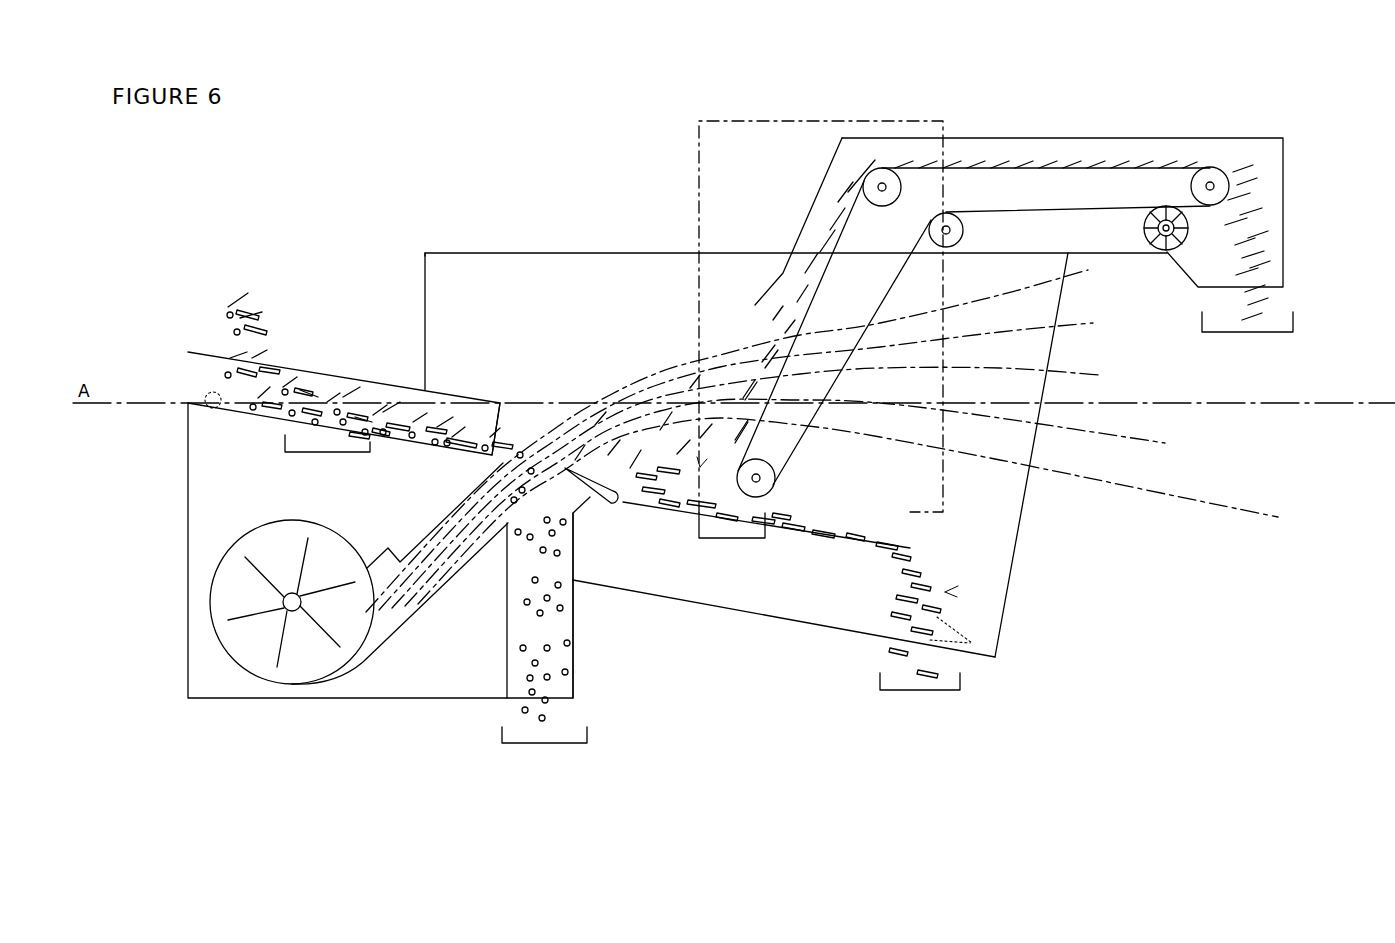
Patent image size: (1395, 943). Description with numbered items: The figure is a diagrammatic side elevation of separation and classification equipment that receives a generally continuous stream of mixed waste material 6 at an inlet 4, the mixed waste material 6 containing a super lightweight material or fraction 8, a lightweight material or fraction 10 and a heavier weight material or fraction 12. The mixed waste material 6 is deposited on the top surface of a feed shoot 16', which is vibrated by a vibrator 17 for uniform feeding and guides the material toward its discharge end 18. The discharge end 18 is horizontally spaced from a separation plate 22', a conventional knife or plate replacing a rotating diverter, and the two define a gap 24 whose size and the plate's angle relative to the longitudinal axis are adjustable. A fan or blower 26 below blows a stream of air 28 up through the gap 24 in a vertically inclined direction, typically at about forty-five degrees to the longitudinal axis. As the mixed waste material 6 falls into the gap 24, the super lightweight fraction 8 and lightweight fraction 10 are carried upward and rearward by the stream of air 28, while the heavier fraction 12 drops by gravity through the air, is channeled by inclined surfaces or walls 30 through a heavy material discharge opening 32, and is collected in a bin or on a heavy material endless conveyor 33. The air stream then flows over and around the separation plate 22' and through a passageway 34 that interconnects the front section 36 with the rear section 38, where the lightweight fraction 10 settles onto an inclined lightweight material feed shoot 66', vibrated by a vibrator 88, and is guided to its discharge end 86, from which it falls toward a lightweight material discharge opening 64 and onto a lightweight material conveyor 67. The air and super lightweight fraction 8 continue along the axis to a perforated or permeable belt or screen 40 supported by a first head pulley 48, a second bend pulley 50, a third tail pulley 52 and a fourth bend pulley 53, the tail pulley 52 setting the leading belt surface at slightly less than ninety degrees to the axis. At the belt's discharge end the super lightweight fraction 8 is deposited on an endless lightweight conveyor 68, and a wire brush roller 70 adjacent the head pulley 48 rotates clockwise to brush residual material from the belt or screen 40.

The inlet 4 is at (186, 399).
The mixed waste material 6 is at (232, 323).
The super lightweight material or fraction 8 is at (1163, 153).
The lightweight material or fraction 10 is at (997, 657).
The heavier weight material or fraction 12 is at (567, 607).
The mixed waste material feed shoot 16' is at (180, 414).
The vibrator 17 is at (327, 453).
The discharge end 18 is at (508, 404).
The separation plate 22' is at (672, 582).
The gap 24 is at (540, 402).
The fan or blower 26 is at (293, 686).
The stream of air 28 is at (437, 567).
The inclined surfaces or walls 30 is at (565, 572).
The heavy material discharge opening 32 is at (523, 561).
The heavy material endless conveyor 33 is at (543, 745).
The passageway 34 is at (620, 289).
The front section 36 is at (500, 192).
The rear section 38 is at (1113, 112).
The perforated or permeable belt or screen 40 is at (1027, 165).
The first head pulley 48 is at (1233, 167).
The second bend pulley 50 is at (945, 212).
The third tail pulley 52 is at (773, 493).
The fourth bend pulley 53 is at (880, 167).
The lightweight material discharge opening 64 is at (700, 465).
The inclined lightweight material feed shoot 66' is at (782, 588).
The lightweight material conveyor 67 is at (920, 693).
The endless lightweight conveyor 68 is at (1245, 334).
The wire brush roller 70 is at (1168, 252).
The discharge end 86 is at (948, 592).
The vibrator 88 is at (733, 540).